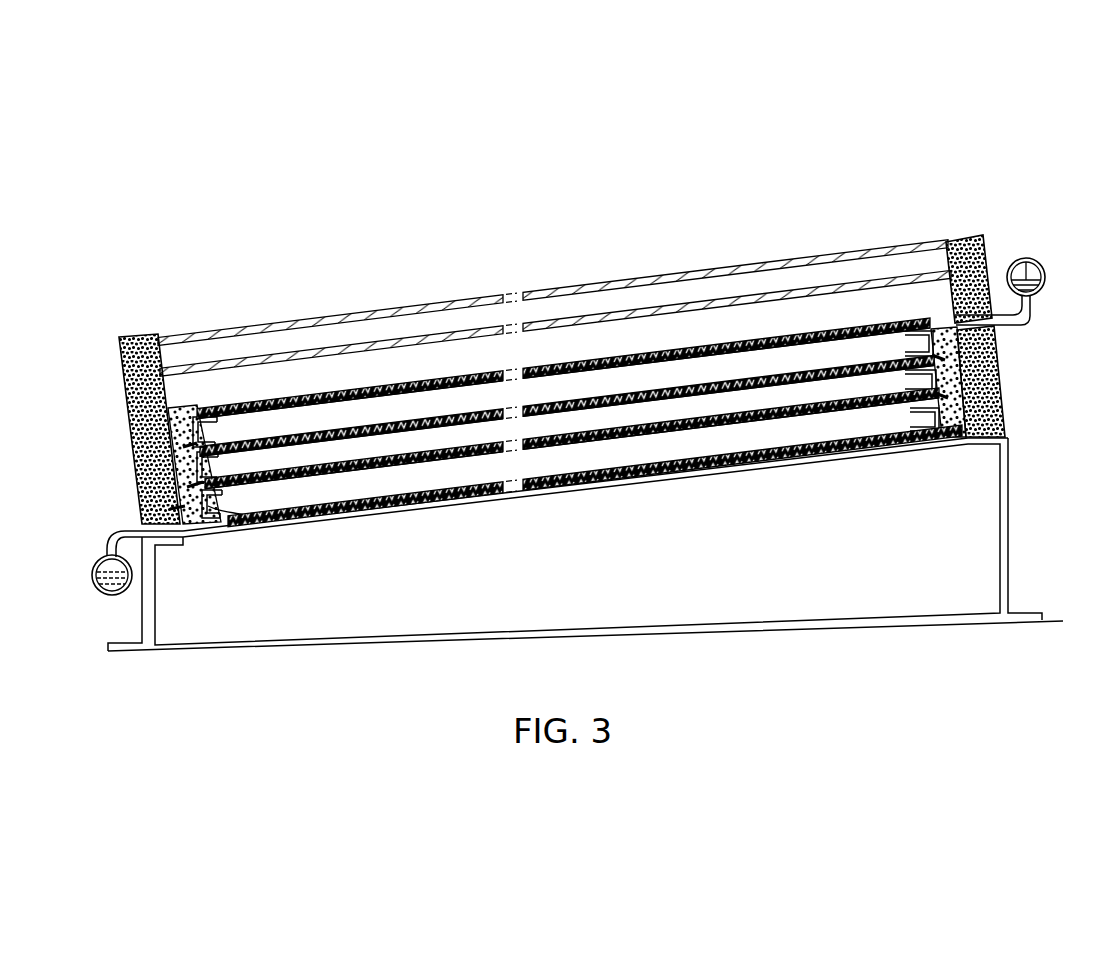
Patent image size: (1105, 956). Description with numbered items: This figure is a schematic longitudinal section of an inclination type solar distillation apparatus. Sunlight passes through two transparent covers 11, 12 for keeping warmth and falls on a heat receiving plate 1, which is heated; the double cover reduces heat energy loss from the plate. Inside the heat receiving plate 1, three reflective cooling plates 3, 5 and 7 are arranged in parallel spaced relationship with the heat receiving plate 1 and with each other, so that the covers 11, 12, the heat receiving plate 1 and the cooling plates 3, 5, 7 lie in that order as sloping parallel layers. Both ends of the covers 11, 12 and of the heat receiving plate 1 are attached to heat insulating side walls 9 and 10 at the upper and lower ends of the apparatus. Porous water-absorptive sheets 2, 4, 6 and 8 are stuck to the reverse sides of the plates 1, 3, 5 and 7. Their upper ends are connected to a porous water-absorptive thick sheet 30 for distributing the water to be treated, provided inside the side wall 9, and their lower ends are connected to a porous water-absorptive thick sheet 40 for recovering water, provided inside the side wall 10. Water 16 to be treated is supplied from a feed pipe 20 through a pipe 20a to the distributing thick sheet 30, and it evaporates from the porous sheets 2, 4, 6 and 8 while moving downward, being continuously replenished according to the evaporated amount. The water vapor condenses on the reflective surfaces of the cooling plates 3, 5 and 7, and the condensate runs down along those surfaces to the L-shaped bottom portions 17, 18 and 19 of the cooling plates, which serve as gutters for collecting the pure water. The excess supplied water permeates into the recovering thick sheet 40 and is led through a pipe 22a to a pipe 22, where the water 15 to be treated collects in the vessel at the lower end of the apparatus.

The heat receiving plate 1 is at (547, 365).
The porous water-absorptive sheet 2 is at (467, 385).
The reflective cooling plate 3 is at (580, 395).
The porous water-absorptive sheet 4 is at (437, 425).
The reflective cooling plate 5 is at (597, 423).
The porous water-absorptive sheet 6 is at (407, 465).
The reflective cooling plate 7 is at (648, 453).
The porous water-absorptive sheet 8 is at (342, 508).
The heat insulating side wall 9 is at (957, 242).
The heat insulating side wall 10 is at (133, 337).
The transparent cover 11 is at (695, 277).
The transparent cover 12 is at (750, 298).
The water to be treated 15 is at (97, 588).
The water to be treated 16 is at (1022, 260).
The bottom portion of reflective cooling plate 17 is at (206, 426).
The bottom portion of reflective cooling plate 18 is at (208, 461).
The bottom portion of reflective cooling plate 19 is at (242, 521).
The feed pipe 20 is at (1043, 263).
The pipe 20a is at (1022, 325).
The pipe 22 is at (130, 567).
The pipe 22a is at (110, 530).
The porous water-absorptive thick sheet 30 is at (952, 438).
The porous water-absorptive thick sheet 40 is at (178, 420).